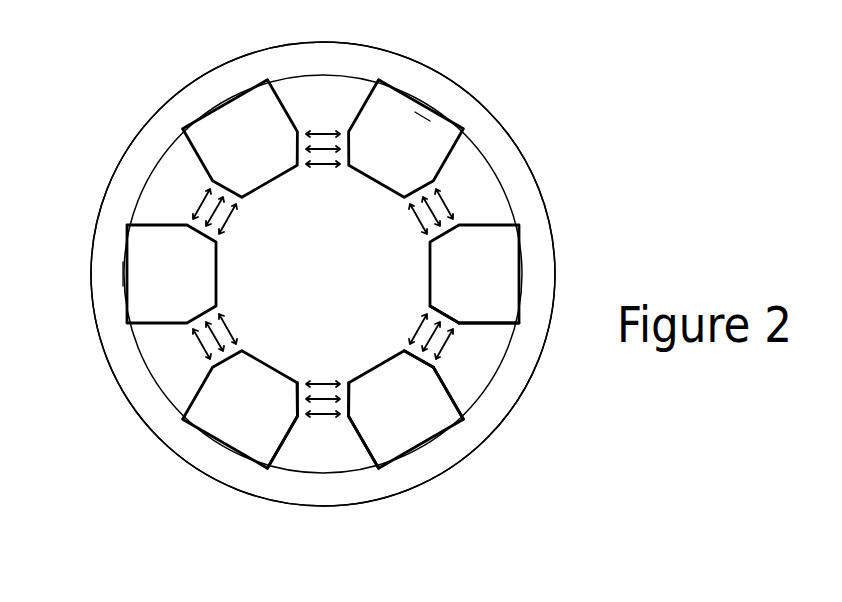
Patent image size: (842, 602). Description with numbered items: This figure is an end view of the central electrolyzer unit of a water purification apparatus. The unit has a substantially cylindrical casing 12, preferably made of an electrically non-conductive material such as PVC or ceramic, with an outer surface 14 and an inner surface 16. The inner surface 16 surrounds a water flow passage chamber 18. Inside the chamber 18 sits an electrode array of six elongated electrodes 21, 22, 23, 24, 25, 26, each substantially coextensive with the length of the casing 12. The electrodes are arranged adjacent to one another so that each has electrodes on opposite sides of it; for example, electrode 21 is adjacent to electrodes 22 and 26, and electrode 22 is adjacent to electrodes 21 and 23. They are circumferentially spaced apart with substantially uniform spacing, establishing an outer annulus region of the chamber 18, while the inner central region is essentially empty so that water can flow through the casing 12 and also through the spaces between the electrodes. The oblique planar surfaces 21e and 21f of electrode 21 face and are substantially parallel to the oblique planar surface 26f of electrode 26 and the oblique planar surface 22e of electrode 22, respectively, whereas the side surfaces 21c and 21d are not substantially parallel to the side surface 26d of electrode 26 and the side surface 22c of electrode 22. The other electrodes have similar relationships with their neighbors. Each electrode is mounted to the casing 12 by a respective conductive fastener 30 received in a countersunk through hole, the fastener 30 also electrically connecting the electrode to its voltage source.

The casing 12 is at (546, 64).
The outer surface 14 is at (363, 44).
The inner surface 16 is at (316, 76).
The water flow passage chamber 18 is at (326, 297).
The electrode 21 is at (437, 423).
The side surface 21c is at (365, 452).
The side surface 21d is at (463, 405).
The oblique planar surface 21e is at (340, 412).
The oblique planar surface 21f is at (433, 358).
The electrode 22 is at (512, 308).
The side surface 22c is at (452, 326).
The oblique planar surface 22e is at (507, 327).
The electrode 23 is at (427, 123).
The electrode 24 is at (257, 100).
The electrode 25 is at (143, 263).
The electrode 26 is at (202, 413).
The side surface 26d is at (282, 452).
The oblique planar surface 26f is at (303, 412).
The conductive fastener 30 is at (123, 270).